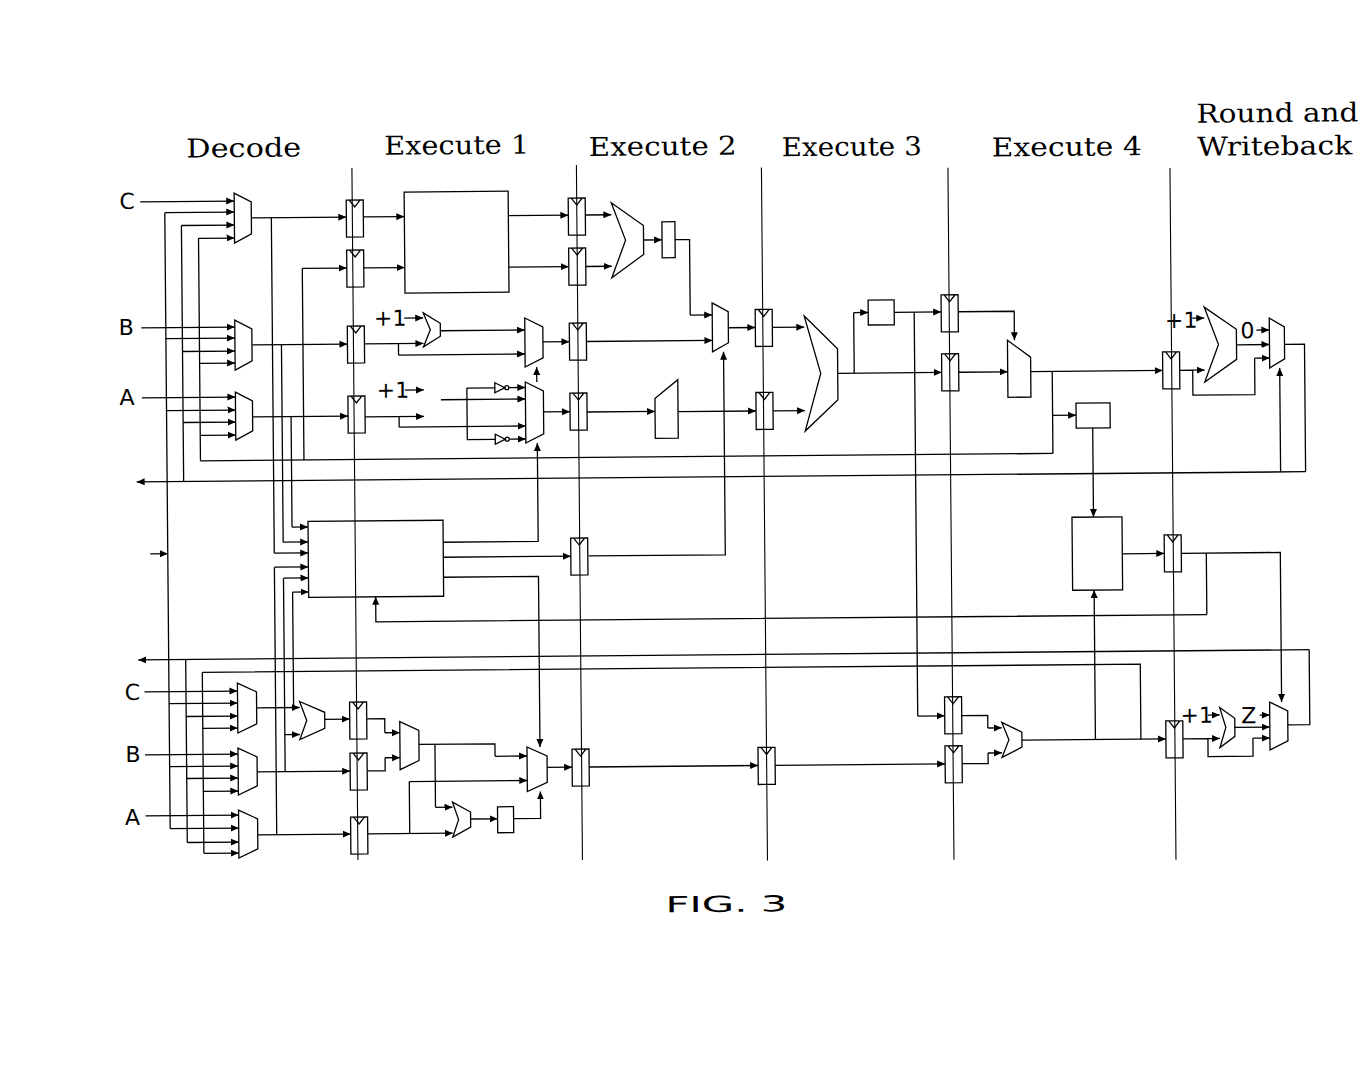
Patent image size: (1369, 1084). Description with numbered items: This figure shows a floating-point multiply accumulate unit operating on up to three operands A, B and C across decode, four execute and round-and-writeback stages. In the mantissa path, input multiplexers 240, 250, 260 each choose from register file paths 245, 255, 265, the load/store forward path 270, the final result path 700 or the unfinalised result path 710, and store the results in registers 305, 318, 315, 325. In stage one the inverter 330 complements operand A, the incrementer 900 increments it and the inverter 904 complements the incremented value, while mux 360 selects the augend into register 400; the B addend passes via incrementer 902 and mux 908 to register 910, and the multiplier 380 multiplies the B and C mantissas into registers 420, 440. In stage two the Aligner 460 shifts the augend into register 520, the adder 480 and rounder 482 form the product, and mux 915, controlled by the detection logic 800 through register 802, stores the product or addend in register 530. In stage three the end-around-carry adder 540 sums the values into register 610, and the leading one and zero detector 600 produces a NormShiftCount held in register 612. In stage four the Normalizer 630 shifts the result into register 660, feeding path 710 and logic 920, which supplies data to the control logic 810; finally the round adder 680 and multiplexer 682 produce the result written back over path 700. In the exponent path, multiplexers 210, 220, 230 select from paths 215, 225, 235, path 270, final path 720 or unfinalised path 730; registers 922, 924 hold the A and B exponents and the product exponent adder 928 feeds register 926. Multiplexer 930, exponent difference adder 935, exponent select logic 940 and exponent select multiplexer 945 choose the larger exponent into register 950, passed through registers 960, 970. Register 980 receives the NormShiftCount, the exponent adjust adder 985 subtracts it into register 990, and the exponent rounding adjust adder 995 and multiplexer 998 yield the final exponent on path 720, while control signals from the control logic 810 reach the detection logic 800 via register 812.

The input multiplexer 210 is at (255, 855).
The path 215 is at (150, 813).
The input multiplexer 220 is at (255, 789).
The path 225 is at (150, 752).
The input multiplexer 230 is at (246, 678).
The path 235 is at (150, 689).
The input multiplexer 240 is at (250, 438).
The path 245 is at (150, 396).
The input multiplexer 250 is at (246, 315).
The path 255 is at (148, 321).
The input multiplexer 260 is at (250, 191).
The path 265 is at (168, 197).
The path 270 is at (151, 548).
The register 305 is at (349, 405).
The register 315 is at (349, 255).
The register 318 is at (349, 352).
The register 325 is at (349, 206).
The inverter 330 is at (505, 443).
The mux 360 is at (526, 410).
The multiplier 380 is at (415, 188).
The register 400 is at (588, 397).
The register 420 is at (571, 252).
The register 440 is at (571, 202).
The Aligner 460 is at (662, 385).
The adder 480 is at (635, 216).
The rounder 482 is at (677, 224).
The register 520 is at (774, 428).
The register 530 is at (774, 312).
The end-around-carry adder 540 is at (830, 340).
The Leading 0 and 1 detector 600 is at (884, 300).
The register 610 is at (960, 392).
The register 612 is at (960, 300).
The Normalizer 630 is at (1030, 358).
The register 660 is at (1164, 360).
The round adder 680 is at (1228, 327).
The multiplexer 682 is at (1284, 322).
The path 700 is at (680, 479).
The path 710 is at (630, 455).
The path 720 is at (692, 654).
The path 730 is at (683, 670).
The detection logic 800 is at (445, 517).
The register 802 is at (588, 540).
The control logic 810 is at (1072, 531).
The register 812 is at (1181, 545).
The incrementer 900 is at (500, 384).
The incrementer 902 is at (445, 318).
The inverter 904 is at (500, 351).
The mux 908 is at (538, 315).
The register 910 is at (588, 325).
The mux 915 is at (724, 302).
The logic 920 is at (1111, 420).
The register 922 is at (350, 851).
The register 924 is at (348, 786).
The register 926 is at (365, 705).
The product exponent adder 928 is at (315, 697).
The multiplexer 930 is at (416, 727).
The exponent difference adder 935 is at (458, 836).
The exponent select logic 940 is at (503, 832).
The exponent select multiplexer 945 is at (528, 748).
The register 950 is at (587, 780).
The register 960 is at (773, 782).
The register 970 is at (943, 786).
The register 980 is at (960, 706).
The exponent adjust adder 985 is at (1012, 759).
The register 990 is at (1164, 762).
The exponent rounding adjust adder 995 is at (1228, 711).
The multiplexer 998 is at (1284, 756).